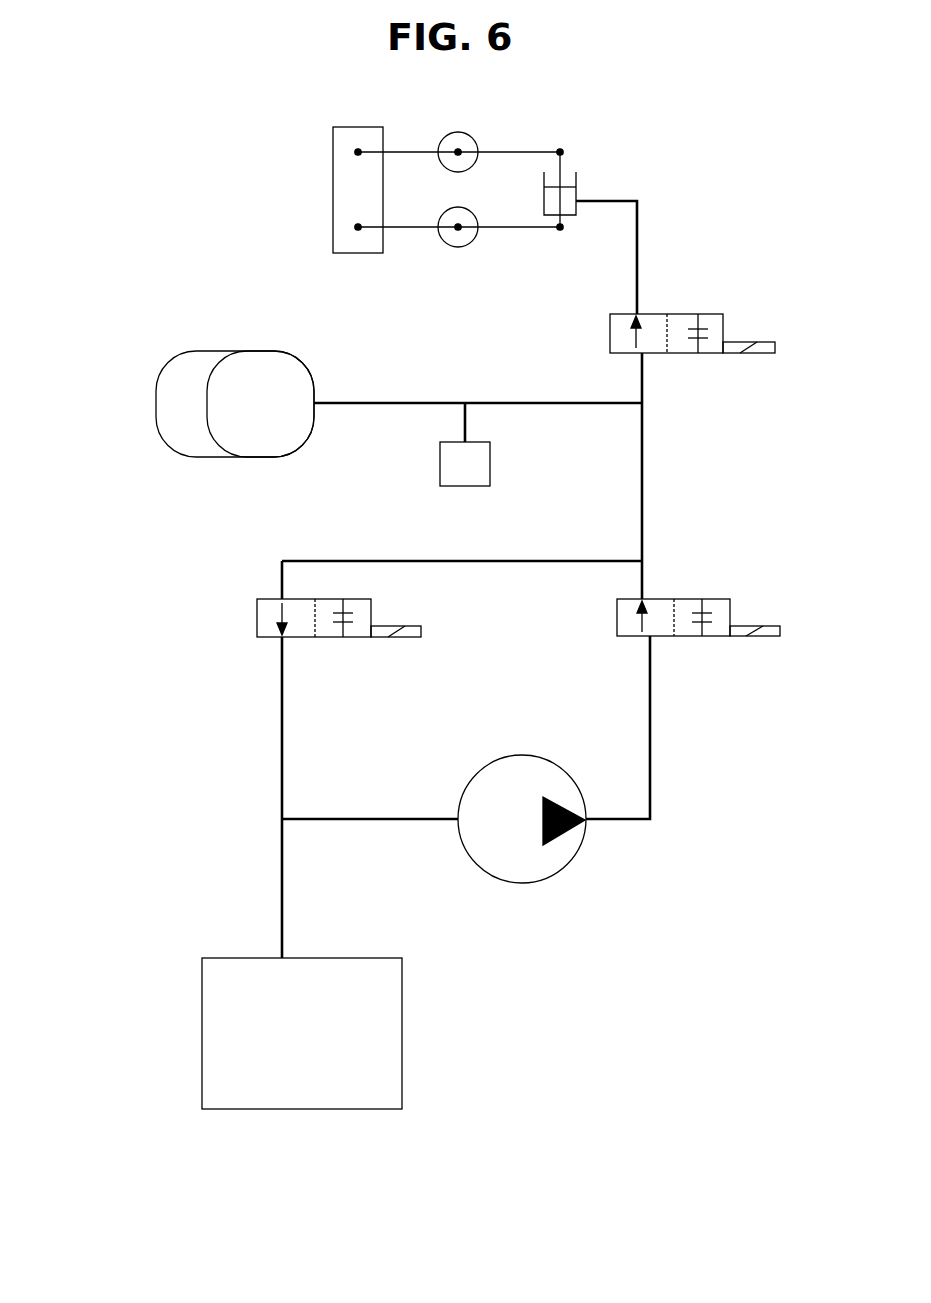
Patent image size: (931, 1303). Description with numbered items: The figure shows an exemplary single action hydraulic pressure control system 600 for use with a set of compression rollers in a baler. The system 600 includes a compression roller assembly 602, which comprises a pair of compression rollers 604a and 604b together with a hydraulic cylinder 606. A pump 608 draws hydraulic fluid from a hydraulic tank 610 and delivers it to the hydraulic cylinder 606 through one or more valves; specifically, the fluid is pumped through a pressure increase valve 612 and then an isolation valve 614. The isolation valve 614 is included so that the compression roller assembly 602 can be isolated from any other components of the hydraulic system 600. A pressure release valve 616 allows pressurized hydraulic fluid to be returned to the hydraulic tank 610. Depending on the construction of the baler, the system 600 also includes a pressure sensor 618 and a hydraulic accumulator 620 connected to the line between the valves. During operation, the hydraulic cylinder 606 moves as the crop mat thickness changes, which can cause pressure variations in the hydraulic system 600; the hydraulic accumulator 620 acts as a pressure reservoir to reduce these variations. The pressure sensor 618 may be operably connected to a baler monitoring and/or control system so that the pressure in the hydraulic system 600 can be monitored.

The single action hydraulic pressure control system 600 is at (128, 88).
The compression roller assembly 602 is at (290, 138).
The compression roller 604a is at (468, 129).
The compression roller 604b is at (468, 251).
The hydraulic cylinder 606 is at (581, 190).
The pump 608 is at (560, 764).
The hydraulic tank 610 is at (338, 953).
The pressure increase valve 612 is at (694, 588).
The isolation valve 614 is at (698, 307).
The pressure release valve 616 is at (254, 610).
The pressure sensor 618 is at (497, 464).
The hydraulic accumulator 620 is at (285, 457).